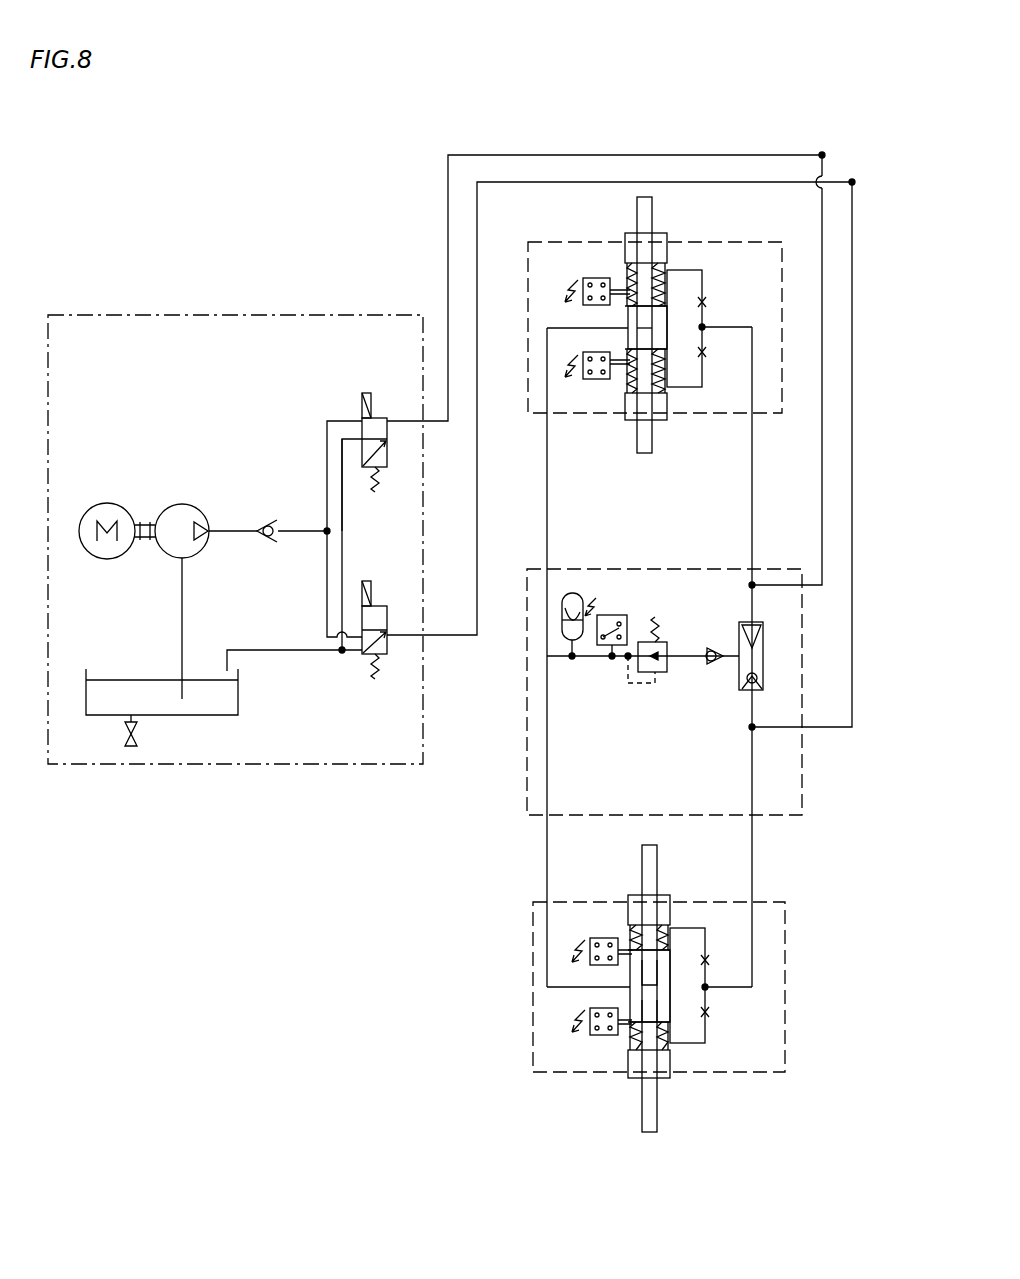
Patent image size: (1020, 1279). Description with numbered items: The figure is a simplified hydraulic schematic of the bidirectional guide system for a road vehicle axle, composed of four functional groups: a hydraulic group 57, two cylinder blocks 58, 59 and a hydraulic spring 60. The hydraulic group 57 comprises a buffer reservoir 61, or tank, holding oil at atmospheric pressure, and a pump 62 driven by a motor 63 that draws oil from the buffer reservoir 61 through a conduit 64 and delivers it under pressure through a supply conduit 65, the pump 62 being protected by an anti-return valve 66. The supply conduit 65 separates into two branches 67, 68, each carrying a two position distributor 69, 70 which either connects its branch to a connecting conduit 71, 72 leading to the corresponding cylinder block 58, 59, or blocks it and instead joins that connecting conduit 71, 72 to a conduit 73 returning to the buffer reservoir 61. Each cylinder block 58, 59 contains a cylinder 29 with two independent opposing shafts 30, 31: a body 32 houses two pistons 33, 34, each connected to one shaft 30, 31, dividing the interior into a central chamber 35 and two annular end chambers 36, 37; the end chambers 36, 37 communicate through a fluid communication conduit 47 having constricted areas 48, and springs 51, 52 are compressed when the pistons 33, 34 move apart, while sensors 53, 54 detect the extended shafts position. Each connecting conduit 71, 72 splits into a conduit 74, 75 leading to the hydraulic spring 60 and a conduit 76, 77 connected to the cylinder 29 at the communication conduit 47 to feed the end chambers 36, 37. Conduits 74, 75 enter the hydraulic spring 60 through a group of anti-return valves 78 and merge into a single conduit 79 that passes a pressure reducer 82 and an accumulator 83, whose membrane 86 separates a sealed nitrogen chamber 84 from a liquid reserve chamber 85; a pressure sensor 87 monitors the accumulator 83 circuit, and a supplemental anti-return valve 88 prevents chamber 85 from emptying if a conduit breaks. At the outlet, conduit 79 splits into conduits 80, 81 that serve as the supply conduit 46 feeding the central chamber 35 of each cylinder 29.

The cylinder 29 is at (632, 434).
The shaft 30 is at (652, 212).
The shaft 31 is at (650, 452).
The body 32 is at (674, 232).
The piston 33 is at (675, 290).
The piston 34 is at (668, 383).
The central chamber 35 is at (628, 324).
The annular end chamber 36 is at (668, 265).
The annular end chamber 37 is at (665, 390).
The supply conduit 46 is at (518, 657).
The fluid communication conduit 47 is at (702, 272).
The constricted area 48 is at (706, 302).
The spring 51 is at (628, 270).
The spring 52 is at (628, 380).
The sensor 53 is at (588, 278).
The sensor 54 is at (590, 379).
The hydraulic group 57 is at (93, 308).
The cylinder block 58 is at (764, 420).
The cylinder block 59 is at (792, 1062).
The hydraulic spring 60 is at (786, 822).
The buffer reservoir 61 is at (160, 707).
The pump 62 is at (180, 504).
The motor 63 is at (105, 503).
The conduit 64 is at (182, 603).
The supply conduit 65 is at (226, 528).
The anti-return valve 66 is at (265, 542).
The branch 67 is at (326, 450).
The branch 68 is at (326, 600).
The two position distributor 69 is at (372, 395).
The two position distributor 70 is at (375, 665).
The connecting conduit 71 is at (448, 172).
The connecting conduit 72 is at (477, 650).
The conduit 73 is at (265, 654).
The conduit 74 is at (750, 610).
The conduit 75 is at (750, 707).
The conduit 76 is at (752, 490).
The conduit 77 is at (753, 782).
The anti-return valves 78 is at (772, 648).
The conduit 79 is at (687, 647).
The conduit 80 is at (545, 492).
The conduit 81 is at (547, 825).
The pressure reducer 82 is at (663, 697).
The accumulator 83 is at (557, 588).
The chamber 84 is at (576, 596).
The chamber 85 is at (575, 658).
The membrane 86 is at (560, 636).
The pressure sensor 87 is at (625, 608).
The supplemental anti-return valve 88 is at (712, 665).